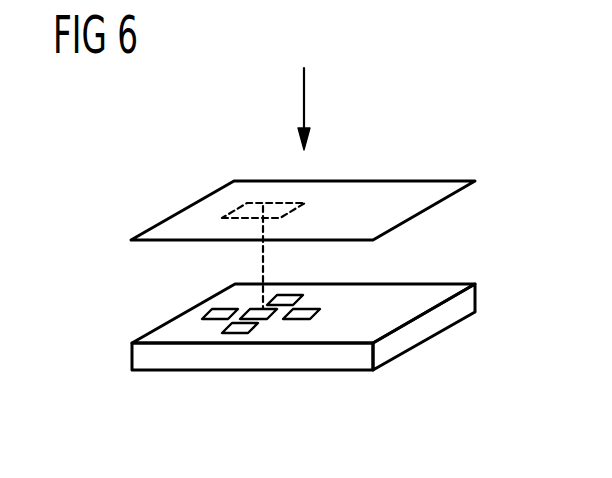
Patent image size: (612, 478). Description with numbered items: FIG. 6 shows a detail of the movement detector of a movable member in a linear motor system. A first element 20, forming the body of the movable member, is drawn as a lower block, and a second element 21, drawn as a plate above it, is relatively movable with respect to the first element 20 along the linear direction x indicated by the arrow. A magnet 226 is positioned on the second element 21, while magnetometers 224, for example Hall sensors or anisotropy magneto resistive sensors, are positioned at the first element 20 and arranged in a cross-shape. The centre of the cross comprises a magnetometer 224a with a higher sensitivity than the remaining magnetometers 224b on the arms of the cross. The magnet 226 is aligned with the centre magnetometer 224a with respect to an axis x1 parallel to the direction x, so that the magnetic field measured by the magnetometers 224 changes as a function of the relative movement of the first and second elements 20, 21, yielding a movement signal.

The first element 20 is at (428, 327).
The second element 21 is at (453, 181).
The magnetometers 224 is at (267, 333).
The centre magnetometer 224a is at (270, 318).
The remaining magnetometers 224b is at (303, 298).
The magnet 226 is at (257, 204).
The linear direction x is at (305, 103).
The axis x1 is at (262, 262).